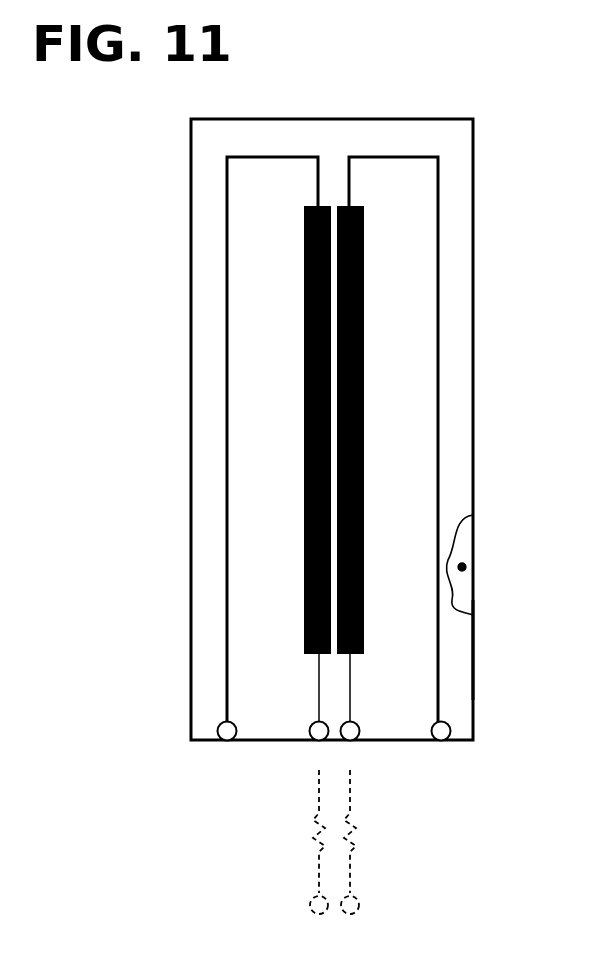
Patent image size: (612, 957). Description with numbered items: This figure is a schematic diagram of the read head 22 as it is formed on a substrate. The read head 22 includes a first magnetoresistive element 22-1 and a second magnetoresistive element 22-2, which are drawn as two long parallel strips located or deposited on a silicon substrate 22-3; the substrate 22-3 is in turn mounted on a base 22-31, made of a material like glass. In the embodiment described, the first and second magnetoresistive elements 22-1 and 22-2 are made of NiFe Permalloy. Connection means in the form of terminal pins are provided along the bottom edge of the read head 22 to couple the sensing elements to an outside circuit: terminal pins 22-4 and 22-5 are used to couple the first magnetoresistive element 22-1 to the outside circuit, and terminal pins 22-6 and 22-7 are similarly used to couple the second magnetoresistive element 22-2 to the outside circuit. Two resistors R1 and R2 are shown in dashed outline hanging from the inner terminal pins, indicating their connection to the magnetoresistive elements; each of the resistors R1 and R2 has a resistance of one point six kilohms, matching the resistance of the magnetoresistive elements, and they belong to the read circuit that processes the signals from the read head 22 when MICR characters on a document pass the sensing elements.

The read head 22 is at (476, 268).
The first magnetoresistive element 22-1 is at (364, 322).
The second magnetoresistive element 22-2 is at (304, 345).
The silicon substrate 22-3 is at (470, 657).
The base 22-31 is at (466, 566).
The terminal pin 22-4 is at (450, 728).
The terminal pin 22-5 is at (359, 735).
The terminal pin 22-6 is at (218, 729).
The terminal pin 22-7 is at (311, 735).
The resistor R1 is at (352, 835).
The resistor R2 is at (318, 835).